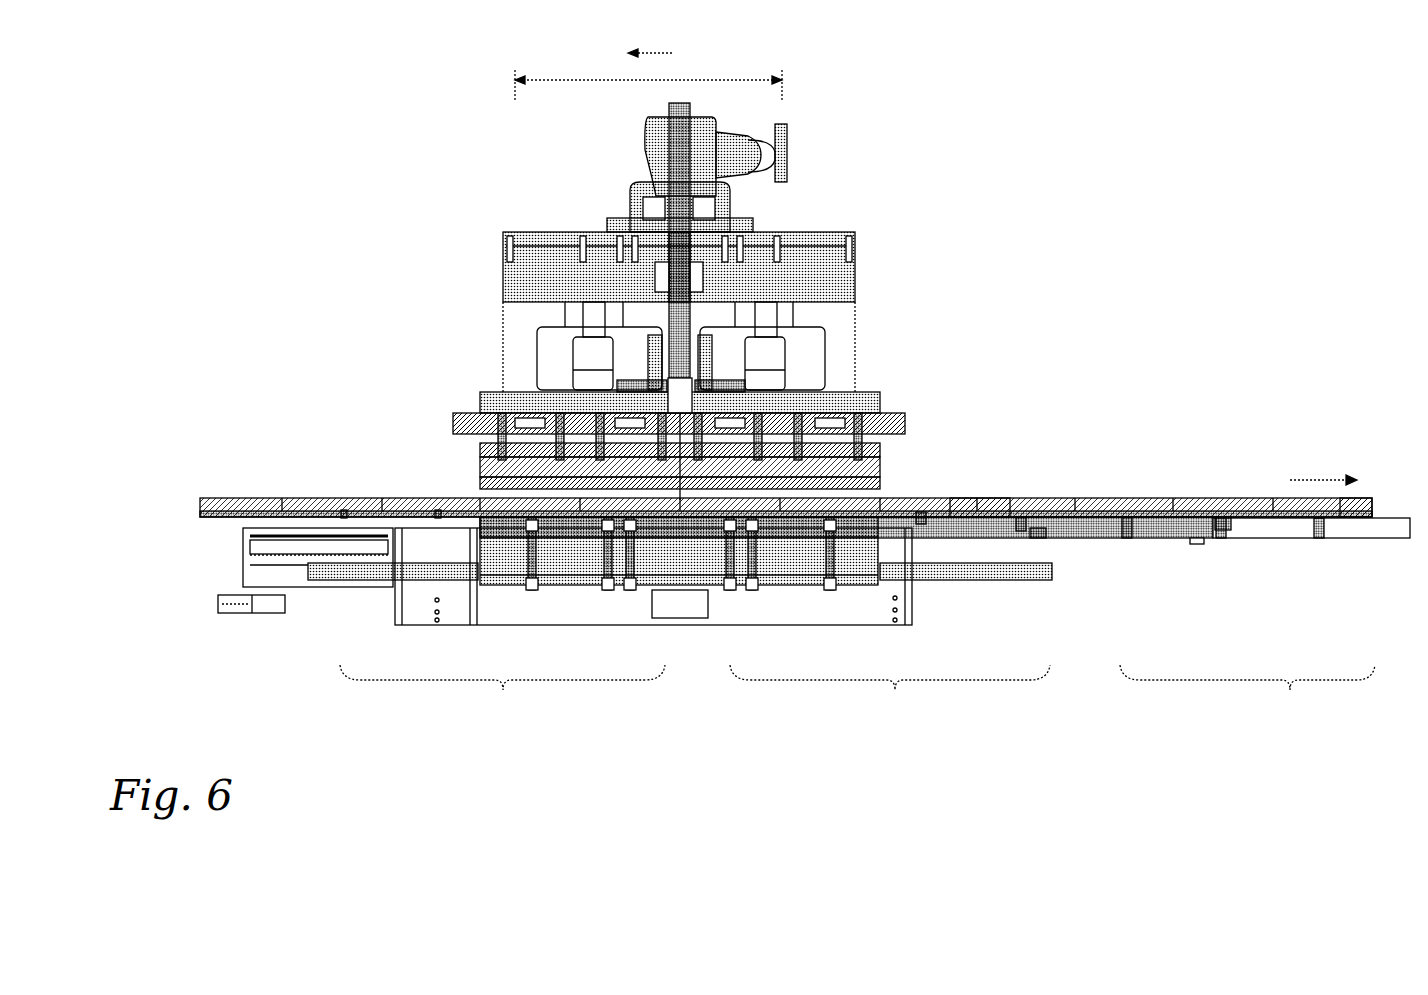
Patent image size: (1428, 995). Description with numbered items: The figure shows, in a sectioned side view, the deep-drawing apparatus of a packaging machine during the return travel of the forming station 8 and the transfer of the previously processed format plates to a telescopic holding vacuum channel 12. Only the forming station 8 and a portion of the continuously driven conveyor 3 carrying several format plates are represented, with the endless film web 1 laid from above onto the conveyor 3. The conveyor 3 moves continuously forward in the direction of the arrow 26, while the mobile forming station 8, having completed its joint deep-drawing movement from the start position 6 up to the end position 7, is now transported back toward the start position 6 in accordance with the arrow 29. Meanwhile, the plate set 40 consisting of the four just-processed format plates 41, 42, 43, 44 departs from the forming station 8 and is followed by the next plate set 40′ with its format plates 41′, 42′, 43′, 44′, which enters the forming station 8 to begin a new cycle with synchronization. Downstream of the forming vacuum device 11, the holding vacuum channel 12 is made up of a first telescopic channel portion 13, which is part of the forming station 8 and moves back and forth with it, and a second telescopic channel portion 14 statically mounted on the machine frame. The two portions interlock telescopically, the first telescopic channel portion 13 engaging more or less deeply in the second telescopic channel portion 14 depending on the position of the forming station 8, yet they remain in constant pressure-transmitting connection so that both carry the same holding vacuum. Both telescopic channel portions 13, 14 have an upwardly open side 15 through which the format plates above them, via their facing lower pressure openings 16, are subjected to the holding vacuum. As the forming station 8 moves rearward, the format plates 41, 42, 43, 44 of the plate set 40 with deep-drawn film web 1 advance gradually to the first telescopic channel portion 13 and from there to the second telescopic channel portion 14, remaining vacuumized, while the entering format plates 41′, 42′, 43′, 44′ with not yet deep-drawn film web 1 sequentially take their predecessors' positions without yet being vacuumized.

The film web 1 is at (200, 498).
The conveyor 3 is at (484, 530).
The start position 6 is at (514, 79).
The end position 7 is at (783, 79).
The forming station 8 is at (457, 226).
The forming vacuum device 11 is at (680, 604).
The holding vacuum channel 12 is at (1197, 546).
The first telescopic channel portion 13 is at (1093, 540).
The second telescopic channel portion 14 is at (1357, 528).
The upwardly open side 15 is at (990, 510).
The lower pressure openings 16 is at (1040, 540).
The arrow 26 is at (1313, 475).
The arrow 29 is at (646, 51).
The plate set 40 is at (890, 692).
The following plate set 40′ is at (502, 692).
The format plate 41 is at (1022, 532).
The format plate 41′ is at (636, 522).
The format plate 42 is at (922, 516).
The format plate 42′ is at (540, 522).
The format plate 43 is at (830, 522).
The format plate 43′ is at (438, 514).
The format plate 44 is at (730, 522).
The format plate 44′ is at (345, 514).